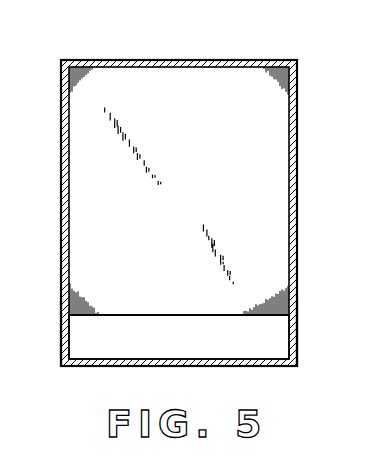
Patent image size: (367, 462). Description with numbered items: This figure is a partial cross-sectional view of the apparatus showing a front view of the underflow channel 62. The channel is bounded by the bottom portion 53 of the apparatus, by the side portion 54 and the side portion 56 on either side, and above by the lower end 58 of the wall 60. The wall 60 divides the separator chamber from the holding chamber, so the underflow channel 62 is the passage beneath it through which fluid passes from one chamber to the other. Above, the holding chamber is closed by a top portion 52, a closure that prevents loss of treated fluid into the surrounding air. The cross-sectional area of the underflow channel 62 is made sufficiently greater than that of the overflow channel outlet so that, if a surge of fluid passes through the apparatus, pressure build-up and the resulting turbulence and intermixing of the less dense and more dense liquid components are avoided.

The top portion 52 is at (150, 60).
The bottom portion 53 is at (184, 366).
The side portion 54 is at (297, 334).
The side portion 56 is at (62, 340).
The lower end of wall 58 is at (176, 314).
The wall 60 is at (206, 182).
The underflow channel 62 is at (154, 360).